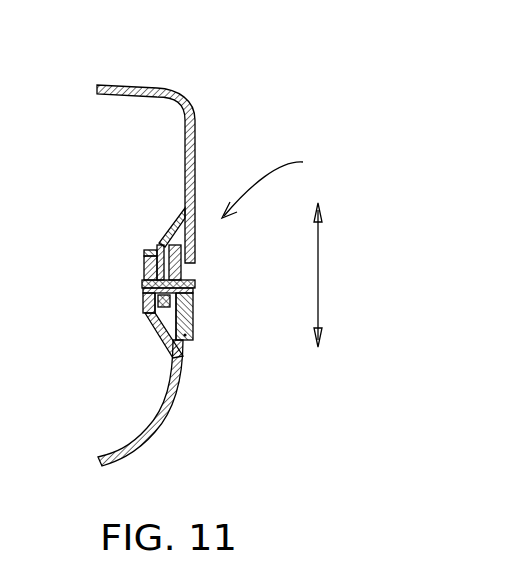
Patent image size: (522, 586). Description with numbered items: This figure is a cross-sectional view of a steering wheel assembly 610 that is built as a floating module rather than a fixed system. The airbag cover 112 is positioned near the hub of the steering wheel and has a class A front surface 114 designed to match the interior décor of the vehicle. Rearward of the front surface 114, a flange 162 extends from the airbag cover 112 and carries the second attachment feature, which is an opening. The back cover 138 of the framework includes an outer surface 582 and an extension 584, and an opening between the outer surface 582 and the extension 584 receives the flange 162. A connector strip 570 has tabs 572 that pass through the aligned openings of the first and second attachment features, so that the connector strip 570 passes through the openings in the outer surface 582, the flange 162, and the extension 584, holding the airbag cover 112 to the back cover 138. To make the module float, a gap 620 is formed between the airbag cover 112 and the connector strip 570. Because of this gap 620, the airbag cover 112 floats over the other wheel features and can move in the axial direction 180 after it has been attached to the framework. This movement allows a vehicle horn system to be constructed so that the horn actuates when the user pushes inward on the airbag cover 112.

The front surface 114 is at (145, 85).
The airbag cover 112 is at (196, 118).
The flange 162 is at (160, 246).
The tab 572 is at (141, 286).
The gap 620 is at (190, 284).
The connector strip 570 is at (195, 300).
The outer surface 582 is at (178, 350).
The extension 584 is at (157, 340).
The back cover 138 is at (172, 408).
The axial direction 180 is at (318, 280).
The steering wheel assembly 610 is at (286, 184).